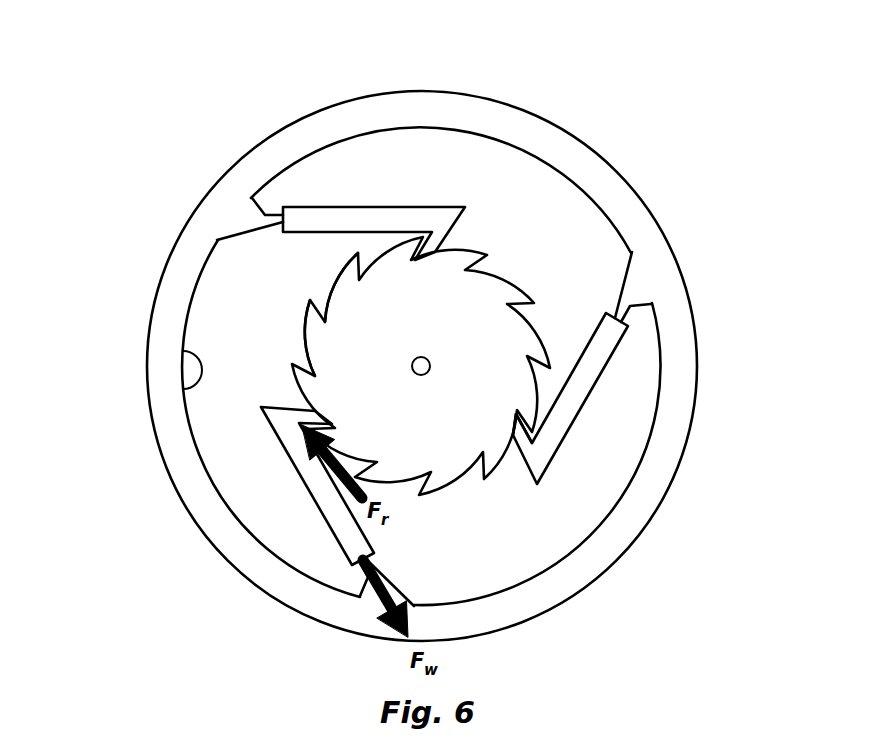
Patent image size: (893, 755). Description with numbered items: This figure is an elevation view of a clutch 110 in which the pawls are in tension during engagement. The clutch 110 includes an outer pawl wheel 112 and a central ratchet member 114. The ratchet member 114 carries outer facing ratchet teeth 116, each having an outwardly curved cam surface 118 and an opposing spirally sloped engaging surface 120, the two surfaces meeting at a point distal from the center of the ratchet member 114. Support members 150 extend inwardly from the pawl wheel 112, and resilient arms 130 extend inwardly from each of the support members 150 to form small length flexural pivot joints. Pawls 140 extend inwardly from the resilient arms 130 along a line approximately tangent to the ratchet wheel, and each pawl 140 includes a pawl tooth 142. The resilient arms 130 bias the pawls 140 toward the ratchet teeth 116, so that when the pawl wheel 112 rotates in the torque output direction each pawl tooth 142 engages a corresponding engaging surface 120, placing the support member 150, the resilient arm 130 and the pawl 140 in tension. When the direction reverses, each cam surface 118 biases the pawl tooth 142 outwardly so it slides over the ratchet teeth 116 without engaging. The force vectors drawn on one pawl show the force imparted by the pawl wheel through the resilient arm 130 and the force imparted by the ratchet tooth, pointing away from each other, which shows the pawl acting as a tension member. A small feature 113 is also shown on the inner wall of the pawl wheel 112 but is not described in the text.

The clutch 110 is at (284, 102).
The pawl wheel 112 is at (638, 492).
The protrusion 113 is at (183, 351).
The ratchet member 114 is at (468, 318).
The ratchet teeth 116 is at (462, 258).
The cam surface 118 is at (308, 322).
The engaging surface 120 is at (322, 313).
The resilient arm 130 is at (650, 318).
The pawl 140 is at (598, 347).
The pawl tooth 142 is at (517, 452).
The support member 150 is at (637, 285).